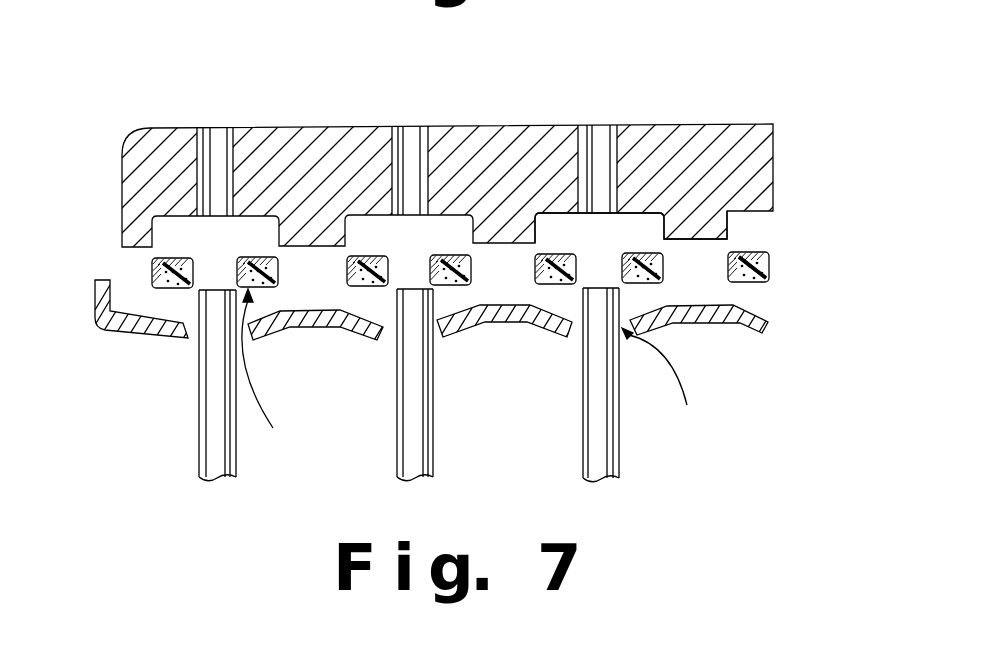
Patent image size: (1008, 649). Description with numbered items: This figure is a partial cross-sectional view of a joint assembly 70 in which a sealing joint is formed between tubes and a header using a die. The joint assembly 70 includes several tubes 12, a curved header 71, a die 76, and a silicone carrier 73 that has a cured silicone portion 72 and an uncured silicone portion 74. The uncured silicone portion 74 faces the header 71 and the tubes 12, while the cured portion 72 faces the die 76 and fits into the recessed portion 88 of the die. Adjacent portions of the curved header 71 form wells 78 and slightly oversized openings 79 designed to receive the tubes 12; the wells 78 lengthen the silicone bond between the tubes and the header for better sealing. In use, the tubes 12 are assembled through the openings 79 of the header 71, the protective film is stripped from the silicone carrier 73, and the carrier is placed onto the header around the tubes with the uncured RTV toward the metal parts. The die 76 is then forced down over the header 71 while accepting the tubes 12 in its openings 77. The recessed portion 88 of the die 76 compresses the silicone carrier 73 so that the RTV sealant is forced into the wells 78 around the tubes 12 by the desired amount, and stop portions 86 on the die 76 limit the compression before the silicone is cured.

The joint assembly 70 is at (704, 82).
The die 76 is at (773, 128).
The openings 77 is at (408, 127).
The stop portions 86 is at (697, 233).
The recessed portion 88 is at (658, 215).
The silicone carrier 73 is at (138, 270).
The cured silicone portion 72 is at (748, 252).
The uncured silicone portion 74 is at (768, 267).
The curved header 71 is at (768, 322).
The tubes 12 is at (213, 387).
The wells 78 is at (274, 374).
The openings 79 is at (671, 374).